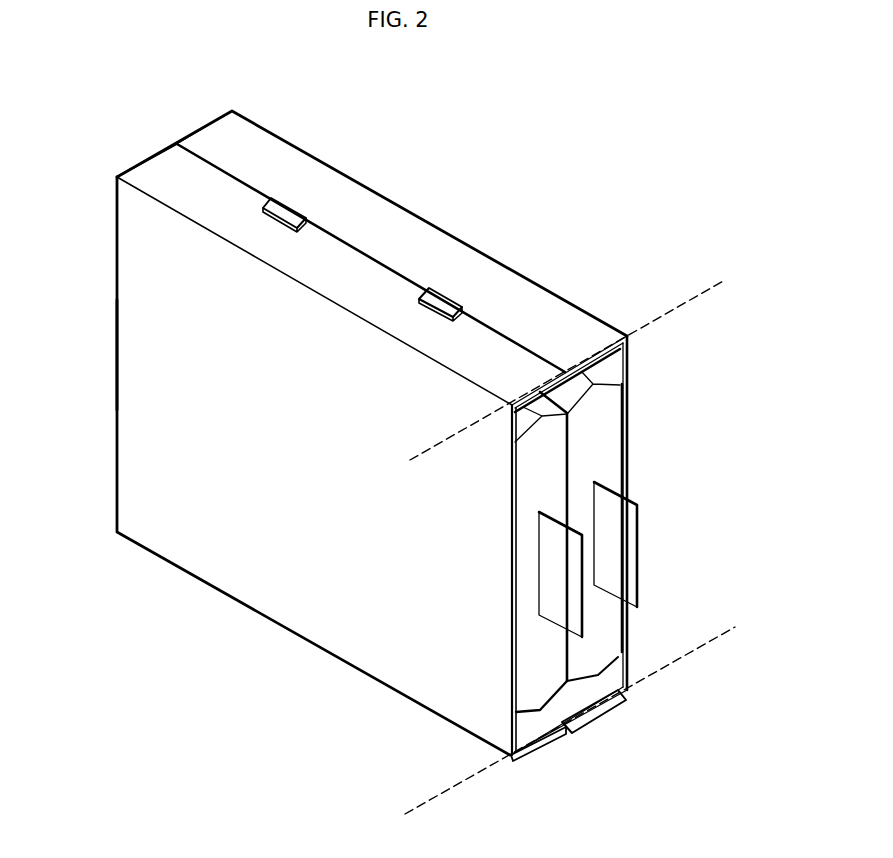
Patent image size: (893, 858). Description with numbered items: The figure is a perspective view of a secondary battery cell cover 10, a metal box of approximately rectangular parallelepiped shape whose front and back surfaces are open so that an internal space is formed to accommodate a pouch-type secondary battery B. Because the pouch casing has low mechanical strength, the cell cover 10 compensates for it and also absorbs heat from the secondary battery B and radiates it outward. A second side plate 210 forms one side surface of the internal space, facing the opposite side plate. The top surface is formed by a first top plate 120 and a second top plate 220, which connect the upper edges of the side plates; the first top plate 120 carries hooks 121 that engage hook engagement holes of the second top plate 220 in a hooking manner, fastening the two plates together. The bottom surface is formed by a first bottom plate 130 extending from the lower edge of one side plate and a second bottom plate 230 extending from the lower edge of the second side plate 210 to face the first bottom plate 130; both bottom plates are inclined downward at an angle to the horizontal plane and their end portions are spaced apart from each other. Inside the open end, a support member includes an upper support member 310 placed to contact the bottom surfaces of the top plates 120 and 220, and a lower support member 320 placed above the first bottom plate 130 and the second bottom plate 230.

The secondary battery cell cover 10 is at (518, 165).
The first top plate 120 is at (208, 136).
The hook 121 is at (433, 290).
The first bottom plate 130 is at (591, 726).
The second side plate 210 is at (126, 295).
The second top plate 220 is at (157, 164).
The second bottom plate 230 is at (541, 746).
The upper support member 310 is at (613, 358).
The lower support member 320 is at (608, 690).
The secondary battery B is at (550, 437).